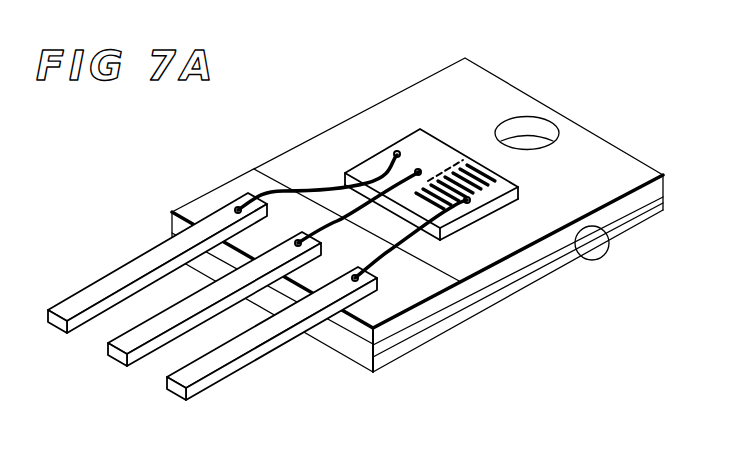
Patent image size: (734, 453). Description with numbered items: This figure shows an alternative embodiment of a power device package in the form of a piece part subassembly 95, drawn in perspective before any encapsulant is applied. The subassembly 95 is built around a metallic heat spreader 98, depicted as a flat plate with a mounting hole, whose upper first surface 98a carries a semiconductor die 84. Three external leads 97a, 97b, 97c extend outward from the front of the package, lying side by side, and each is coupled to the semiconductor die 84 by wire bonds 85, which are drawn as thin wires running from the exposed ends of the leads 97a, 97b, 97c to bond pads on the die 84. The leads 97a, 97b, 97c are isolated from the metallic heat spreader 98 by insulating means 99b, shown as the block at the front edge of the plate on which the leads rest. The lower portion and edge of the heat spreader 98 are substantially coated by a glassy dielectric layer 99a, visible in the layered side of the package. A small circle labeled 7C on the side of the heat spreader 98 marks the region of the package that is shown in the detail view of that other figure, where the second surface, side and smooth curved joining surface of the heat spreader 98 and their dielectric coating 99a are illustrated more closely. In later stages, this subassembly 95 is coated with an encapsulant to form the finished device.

The piece part subassembly 95 is at (164, 134).
The semiconductor die 84 is at (373, 150).
The wire bonds 85 is at (372, 263).
The external lead 97a is at (117, 275).
The external lead 97b is at (118, 364).
The external lead 97c is at (207, 386).
The metallic heat spreader 98 is at (641, 160).
The first surface 98a is at (491, 102).
The glassy dielectric layer 99a is at (524, 286).
The insulating means 99b is at (427, 303).
The detail circle 7C is at (604, 256).